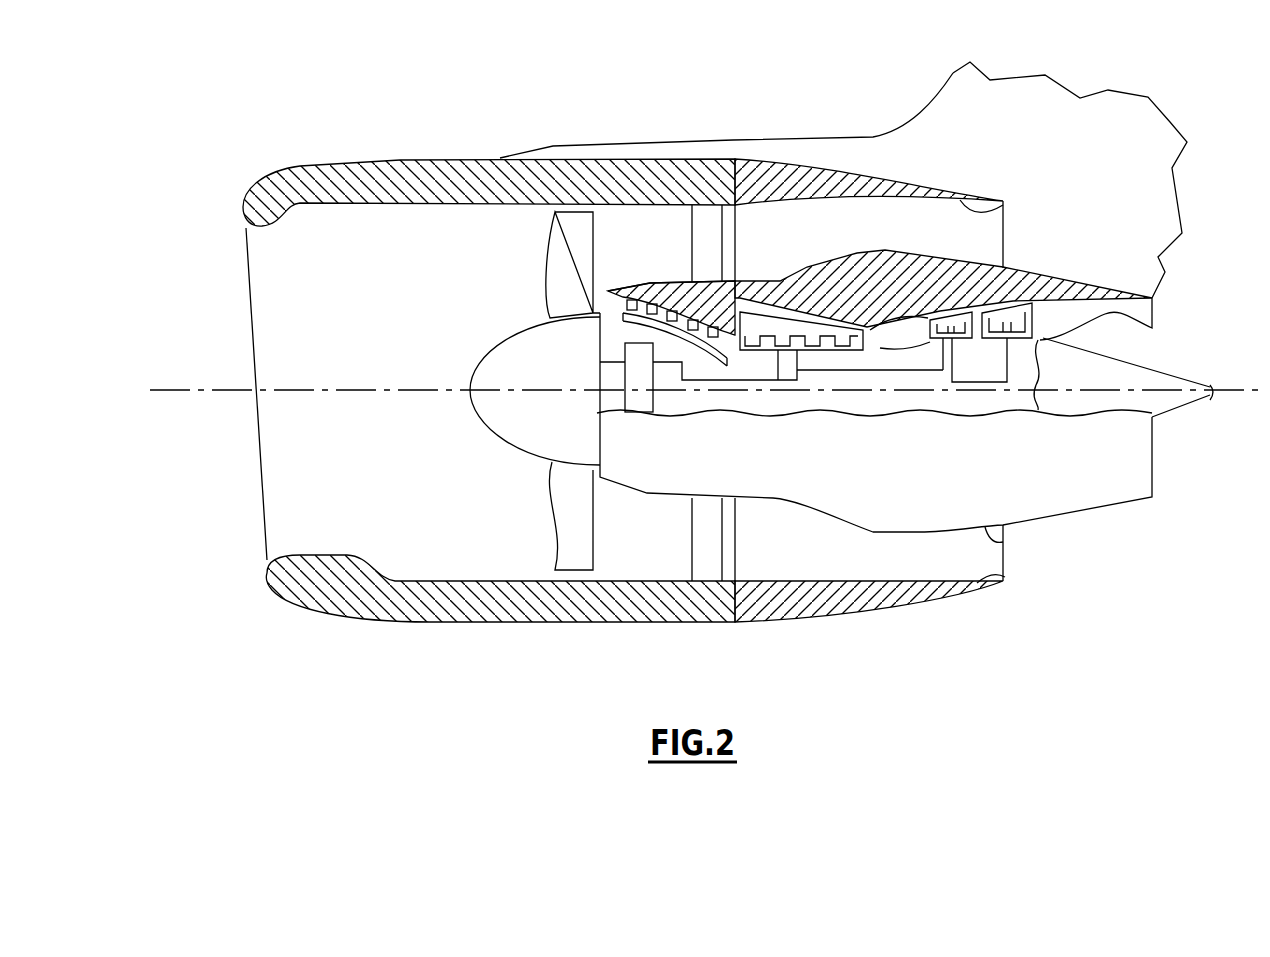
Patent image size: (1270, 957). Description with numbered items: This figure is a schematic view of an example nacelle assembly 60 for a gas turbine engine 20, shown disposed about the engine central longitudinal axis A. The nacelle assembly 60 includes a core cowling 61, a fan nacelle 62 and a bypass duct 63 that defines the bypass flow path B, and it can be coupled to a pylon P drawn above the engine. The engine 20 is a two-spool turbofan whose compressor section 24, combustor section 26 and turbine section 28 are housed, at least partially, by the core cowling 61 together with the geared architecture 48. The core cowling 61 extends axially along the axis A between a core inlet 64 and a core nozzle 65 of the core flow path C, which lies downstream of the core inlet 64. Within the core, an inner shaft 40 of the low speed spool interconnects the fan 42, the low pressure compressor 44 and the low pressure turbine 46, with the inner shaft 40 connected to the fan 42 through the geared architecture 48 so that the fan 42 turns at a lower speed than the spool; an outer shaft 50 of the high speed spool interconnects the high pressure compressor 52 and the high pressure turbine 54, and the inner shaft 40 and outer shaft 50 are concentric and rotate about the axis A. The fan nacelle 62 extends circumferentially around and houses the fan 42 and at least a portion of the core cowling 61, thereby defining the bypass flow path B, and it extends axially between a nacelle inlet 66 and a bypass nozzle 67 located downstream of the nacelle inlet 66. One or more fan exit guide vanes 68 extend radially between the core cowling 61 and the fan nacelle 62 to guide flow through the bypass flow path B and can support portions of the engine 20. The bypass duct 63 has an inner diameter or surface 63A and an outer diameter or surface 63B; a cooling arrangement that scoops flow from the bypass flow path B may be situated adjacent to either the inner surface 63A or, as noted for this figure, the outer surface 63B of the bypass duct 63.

The gas turbine engine 20 is at (874, 422).
The nacelle assembly 60 is at (650, 302).
The fan nacelle 62 is at (423, 150).
The core inlet 64 is at (613, 284).
The nacelle inlet 66 is at (247, 296).
The bypass nozzle 67 is at (1005, 247).
The fan exit guide vanes 68 is at (723, 230).
The fan 42 is at (540, 297).
The low pressure compressor 44 is at (708, 372).
The geared architecture 48 is at (643, 405).
The compressor section 24 is at (736, 375).
The high pressure compressor 52 is at (776, 384).
The inner shaft 40 is at (822, 384).
The outer shaft 50 is at (856, 372).
The combustor section 26 is at (896, 370).
The high pressure turbine 54 is at (943, 372).
The turbine section 28 is at (983, 360).
The low pressure turbine 46 is at (1037, 358).
The core cowling 61 is at (1084, 275).
The bypass duct 63 is at (1005, 204).
The inner surface of bypass duct 63A is at (1003, 545).
The outer surface of bypass duct 63B is at (1005, 577).
The core nozzle 65 is at (1153, 317).
The pylon P is at (1160, 130).
The engine central longitudinal axis A is at (1240, 393).
The bypass flow path B is at (660, 253).
The core flow path C is at (611, 298).